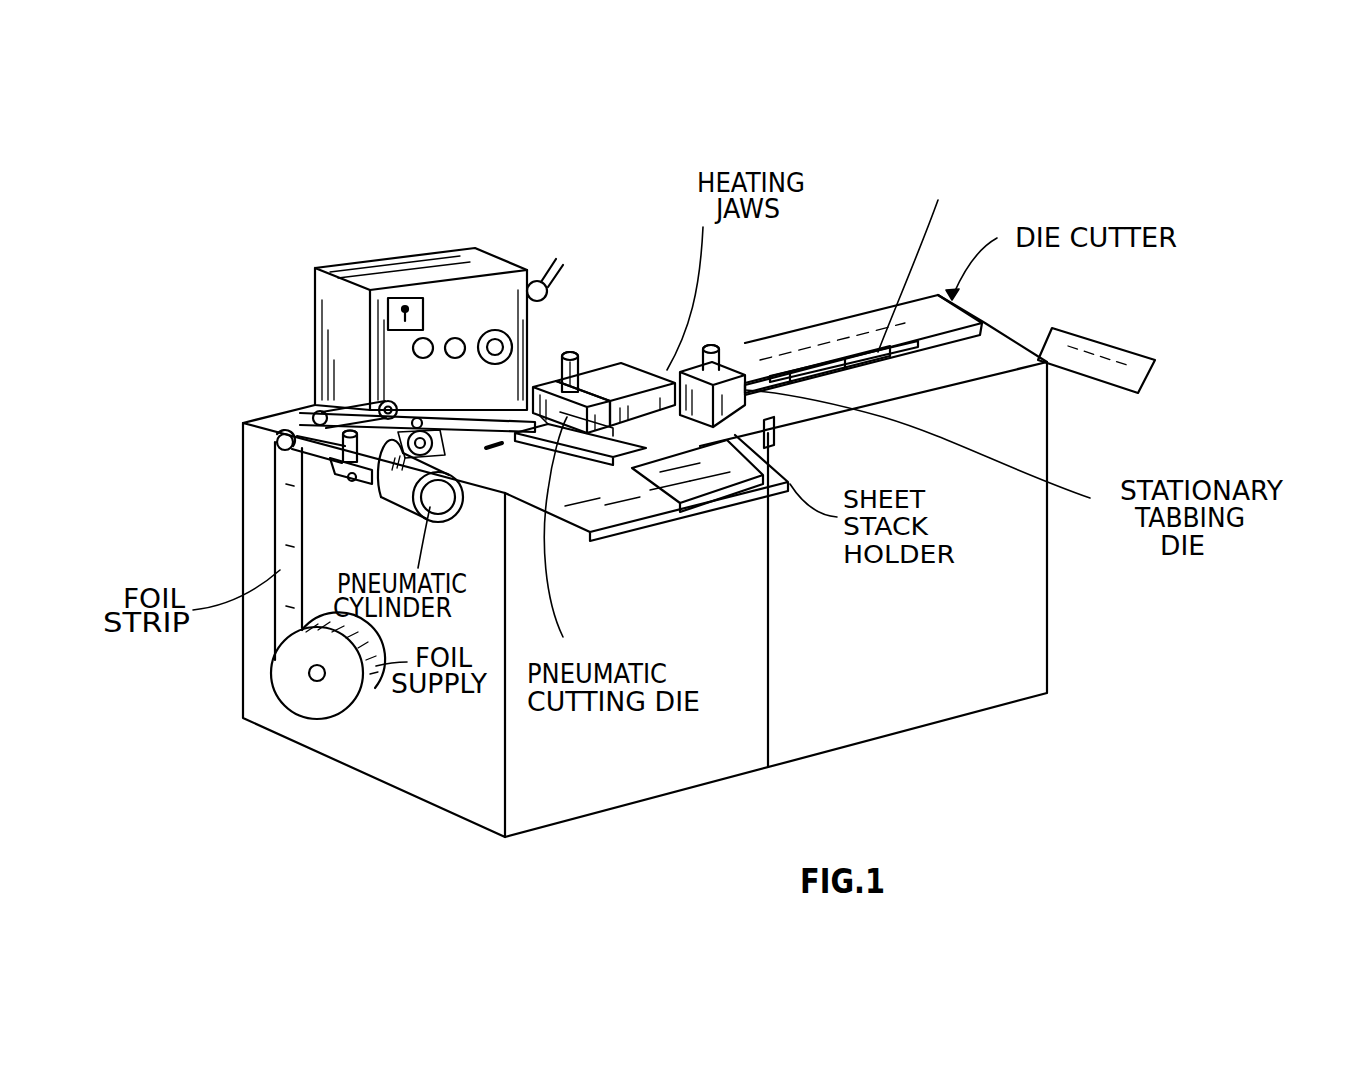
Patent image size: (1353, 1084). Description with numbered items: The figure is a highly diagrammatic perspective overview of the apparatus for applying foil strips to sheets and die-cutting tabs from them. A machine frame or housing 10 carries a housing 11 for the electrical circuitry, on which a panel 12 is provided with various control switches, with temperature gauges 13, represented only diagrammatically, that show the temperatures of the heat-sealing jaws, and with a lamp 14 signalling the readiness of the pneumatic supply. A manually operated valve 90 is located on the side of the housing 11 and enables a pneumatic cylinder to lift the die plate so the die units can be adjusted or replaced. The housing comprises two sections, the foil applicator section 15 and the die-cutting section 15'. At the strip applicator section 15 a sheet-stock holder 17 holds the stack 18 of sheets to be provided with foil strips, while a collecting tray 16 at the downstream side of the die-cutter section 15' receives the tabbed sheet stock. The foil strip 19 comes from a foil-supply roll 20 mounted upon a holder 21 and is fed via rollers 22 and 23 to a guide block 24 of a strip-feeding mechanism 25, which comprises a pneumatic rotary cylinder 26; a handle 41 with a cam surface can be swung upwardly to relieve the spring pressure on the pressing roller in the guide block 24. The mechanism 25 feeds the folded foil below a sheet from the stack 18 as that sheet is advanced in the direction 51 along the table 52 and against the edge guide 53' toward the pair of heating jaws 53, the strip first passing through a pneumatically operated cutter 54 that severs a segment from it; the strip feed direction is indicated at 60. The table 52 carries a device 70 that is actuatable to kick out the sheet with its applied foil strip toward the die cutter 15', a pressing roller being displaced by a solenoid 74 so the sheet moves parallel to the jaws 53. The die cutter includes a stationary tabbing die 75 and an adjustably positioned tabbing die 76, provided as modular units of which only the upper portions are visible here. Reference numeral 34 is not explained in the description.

The machine frame or housing 10 is at (477, 813).
The housing for the electrical circuitry 11 is at (393, 262).
The panel 12 is at (500, 283).
The temperature gauges 13 is at (410, 296).
The lamp 14 is at (490, 330).
The foil applicator section 15 is at (646, 222).
The die-cutting section 15' is at (849, 203).
The collecting tray 16 is at (1118, 382).
The sheet-stock holder 17 is at (637, 520).
The stack of sheets 18 is at (735, 506).
The foil strip 19 is at (280, 627).
The foil-supply roll 20 is at (373, 690).
The holder 21 is at (309, 676).
The roller 22 is at (278, 446).
The roller 23 is at (340, 448).
The guide block 24 is at (360, 492).
The strip-feeding mechanism 25 is at (302, 408).
The pneumatic rotary cylinder 26 is at (407, 512).
The clamp 34 is at (413, 408).
The handle 41 is at (360, 405).
The sheet advance direction 51 is at (645, 430).
The table 52 is at (772, 443).
The heating jaws 53 is at (615, 368).
The edge guide 53' is at (577, 523).
The pneumatically operated cutter 54 is at (553, 390).
The strip feed direction 60 is at (490, 452).
The kick-out device 70 is at (710, 348).
The solenoid 74 is at (583, 367).
The stationary tabbing die 75 is at (765, 373).
The adjustably positioned tabbing die 76 is at (863, 353).
The manually operated valve 90 is at (552, 274).